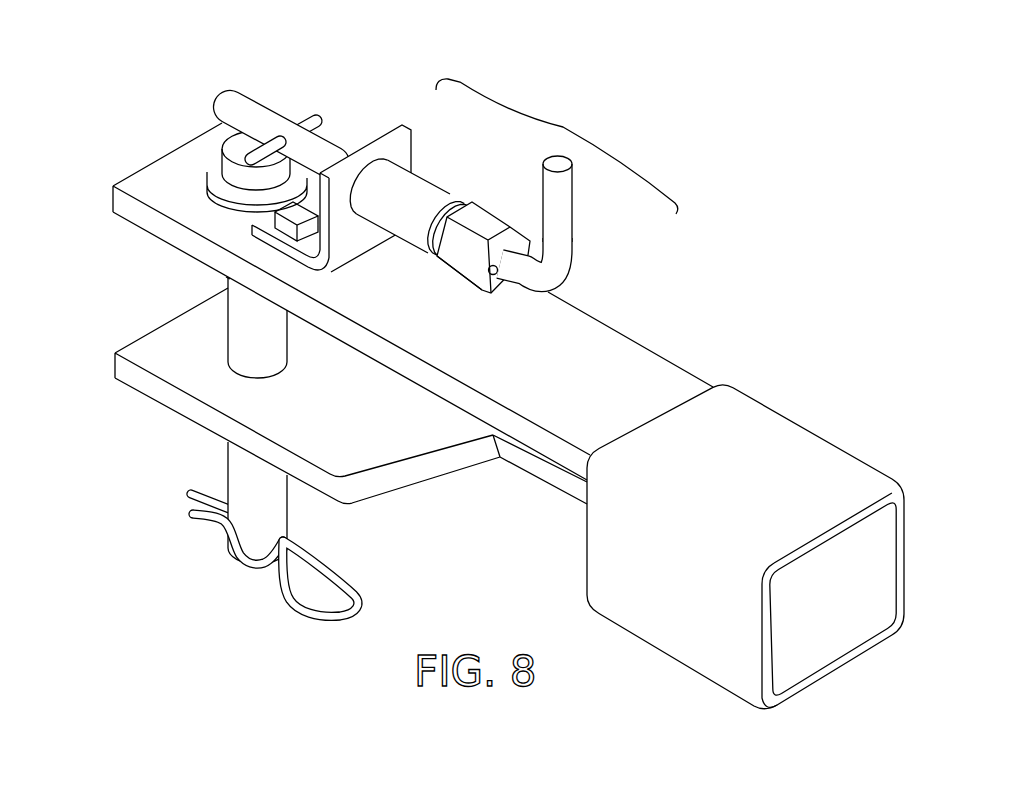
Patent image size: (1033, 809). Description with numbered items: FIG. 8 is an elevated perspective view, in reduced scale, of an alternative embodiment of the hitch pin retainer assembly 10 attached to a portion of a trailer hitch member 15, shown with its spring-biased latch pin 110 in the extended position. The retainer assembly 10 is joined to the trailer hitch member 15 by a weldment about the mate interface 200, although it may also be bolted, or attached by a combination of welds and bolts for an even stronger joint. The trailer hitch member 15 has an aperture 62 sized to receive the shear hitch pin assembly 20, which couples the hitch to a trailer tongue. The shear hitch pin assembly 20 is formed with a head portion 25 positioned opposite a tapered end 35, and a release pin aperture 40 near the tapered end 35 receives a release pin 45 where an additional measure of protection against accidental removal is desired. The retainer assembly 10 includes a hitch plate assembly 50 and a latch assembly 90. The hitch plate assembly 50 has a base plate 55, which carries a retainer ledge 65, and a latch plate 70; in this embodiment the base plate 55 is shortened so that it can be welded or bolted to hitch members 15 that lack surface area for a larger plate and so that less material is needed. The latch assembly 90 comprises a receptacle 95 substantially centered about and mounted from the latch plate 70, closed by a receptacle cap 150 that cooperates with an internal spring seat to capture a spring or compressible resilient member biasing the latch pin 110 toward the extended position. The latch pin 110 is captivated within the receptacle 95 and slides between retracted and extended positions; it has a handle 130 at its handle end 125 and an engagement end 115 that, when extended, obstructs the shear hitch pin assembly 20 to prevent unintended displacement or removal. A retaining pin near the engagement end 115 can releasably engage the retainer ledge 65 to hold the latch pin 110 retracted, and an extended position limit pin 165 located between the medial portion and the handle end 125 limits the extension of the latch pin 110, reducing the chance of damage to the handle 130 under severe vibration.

The hitch pin retainer assembly 10 is at (676, 145).
The trailer hitch member 15 is at (681, 357).
The shear hitch pin assembly 20 is at (218, 483).
The head portion 25 is at (207, 172).
The tapered end 35 is at (244, 566).
The release pin aperture 40 is at (280, 540).
The release pin 45 is at (360, 603).
The hitch plate assembly 50 is at (248, 221).
The base plate 55 is at (244, 230).
The aperture 62 is at (218, 340).
The retainer ledge 65 is at (228, 276).
The latch plate 70 is at (410, 121).
The latch assembly 90 is at (576, 121).
The receptacle 95 is at (447, 196).
The latch pin 110 is at (588, 250).
The engagement end 115 is at (237, 90).
The handle end 125 is at (550, 282).
The handle 130 is at (573, 196).
The receptacle cap 150 is at (443, 268).
The extended position limit pin 165 is at (491, 275).
The mate interface 200 is at (255, 248).